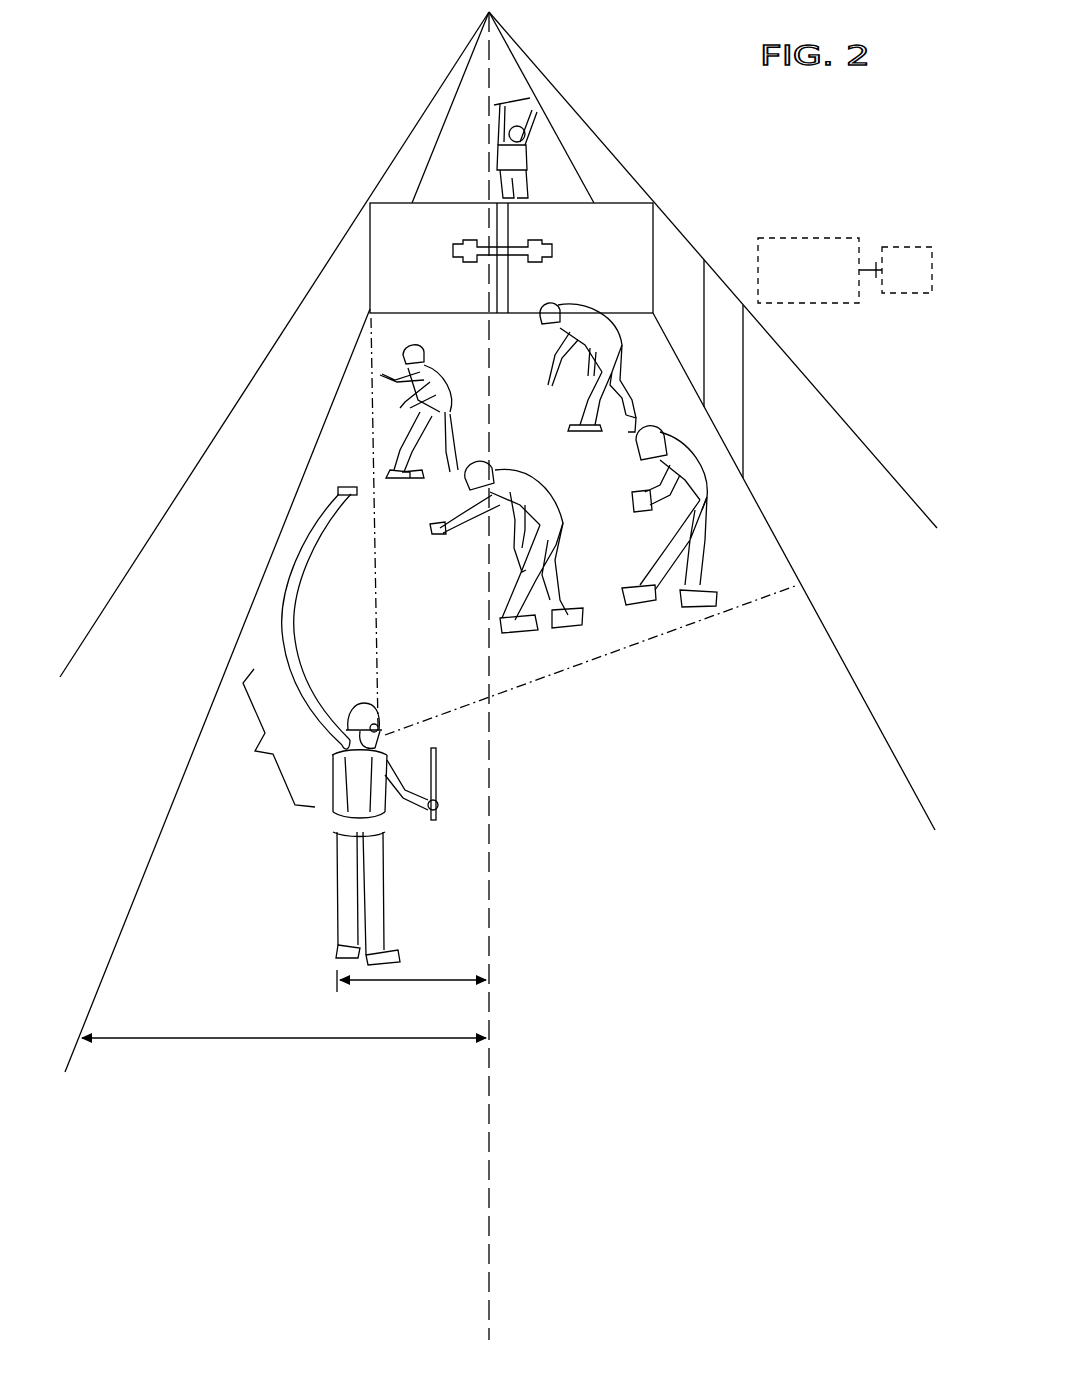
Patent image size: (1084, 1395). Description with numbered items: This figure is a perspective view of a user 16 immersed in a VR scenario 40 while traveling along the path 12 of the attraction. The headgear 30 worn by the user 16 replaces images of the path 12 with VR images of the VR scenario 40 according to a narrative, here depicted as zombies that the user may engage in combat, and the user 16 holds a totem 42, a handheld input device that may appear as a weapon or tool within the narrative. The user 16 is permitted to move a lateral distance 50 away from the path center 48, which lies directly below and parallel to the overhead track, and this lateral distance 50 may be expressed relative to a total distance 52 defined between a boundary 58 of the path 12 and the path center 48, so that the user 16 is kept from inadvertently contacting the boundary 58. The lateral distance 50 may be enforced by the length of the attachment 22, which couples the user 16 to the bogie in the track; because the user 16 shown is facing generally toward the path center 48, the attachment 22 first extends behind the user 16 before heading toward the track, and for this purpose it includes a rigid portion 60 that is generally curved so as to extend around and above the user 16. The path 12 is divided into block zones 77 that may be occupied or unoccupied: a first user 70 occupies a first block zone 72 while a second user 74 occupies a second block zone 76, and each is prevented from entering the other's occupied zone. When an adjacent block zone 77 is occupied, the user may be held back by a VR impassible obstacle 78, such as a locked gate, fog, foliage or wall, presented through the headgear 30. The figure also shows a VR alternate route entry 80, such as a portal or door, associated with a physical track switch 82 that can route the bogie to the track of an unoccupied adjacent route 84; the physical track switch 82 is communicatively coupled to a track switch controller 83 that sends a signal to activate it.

The path 12 is at (665, 775).
The user 16 is at (538, 160).
The attachment 22 is at (335, 510).
The headgear 30 is at (383, 725).
The VR scenario 40 is at (507, 373).
The totem 42 is at (440, 782).
The path center 48 is at (490, 1115).
The lateral distance 50 is at (402, 981).
The total distance 52 is at (284, 1037).
The boundary 58 is at (177, 603).
The rigid portion 60 is at (267, 738).
The first user 70 is at (322, 883).
The first block zone 72 is at (857, 410).
The second user 74 is at (512, 93).
The second block zone 76 is at (610, 118).
The block zone 77 is at (572, 84).
The VR impassible obstacle 78 is at (638, 262).
The VR alternate route entry 80 is at (735, 391).
The physical track switch 82 is at (812, 238).
The track switch controller 83 is at (894, 283).
The adjacent route 84 is at (212, 243).